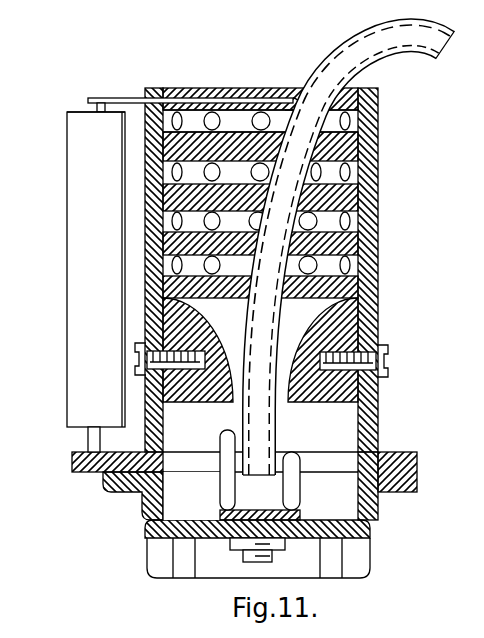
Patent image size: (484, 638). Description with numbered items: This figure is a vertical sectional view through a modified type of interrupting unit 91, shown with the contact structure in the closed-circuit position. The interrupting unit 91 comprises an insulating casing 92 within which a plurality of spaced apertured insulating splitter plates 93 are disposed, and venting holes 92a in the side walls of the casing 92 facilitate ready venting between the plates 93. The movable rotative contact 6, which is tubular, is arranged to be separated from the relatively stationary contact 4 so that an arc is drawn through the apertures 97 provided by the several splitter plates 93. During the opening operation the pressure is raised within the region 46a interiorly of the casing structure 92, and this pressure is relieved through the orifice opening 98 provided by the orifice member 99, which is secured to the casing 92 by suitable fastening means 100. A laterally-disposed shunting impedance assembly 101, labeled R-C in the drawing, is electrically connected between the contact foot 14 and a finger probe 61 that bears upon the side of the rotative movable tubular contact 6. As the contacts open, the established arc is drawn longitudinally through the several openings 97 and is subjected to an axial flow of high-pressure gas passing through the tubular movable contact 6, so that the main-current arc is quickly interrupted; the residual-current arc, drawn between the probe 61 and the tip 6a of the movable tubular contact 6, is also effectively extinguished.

The movable rotative contact 6 is at (358, 35).
The tip of the movable tubular contact 6a is at (241, 480).
The finger probe 61 is at (295, 98).
The venting holes 92a is at (240, 106).
The apertures 97 is at (375, 145).
The splitter plates 93 is at (352, 228).
The interrupting unit 91 is at (407, 282).
The insulating casing 92 is at (378, 310).
The fastening means 100 is at (385, 352).
The orifice member 99 is at (378, 398).
The orifice opening 98 is at (238, 408).
The stationary contact 4 is at (290, 452).
The region 46a is at (208, 501).
The contact foot 14 is at (142, 515).
The shunting impedance assembly 101 is at (67, 212).
The remote control R-C is at (67, 142).